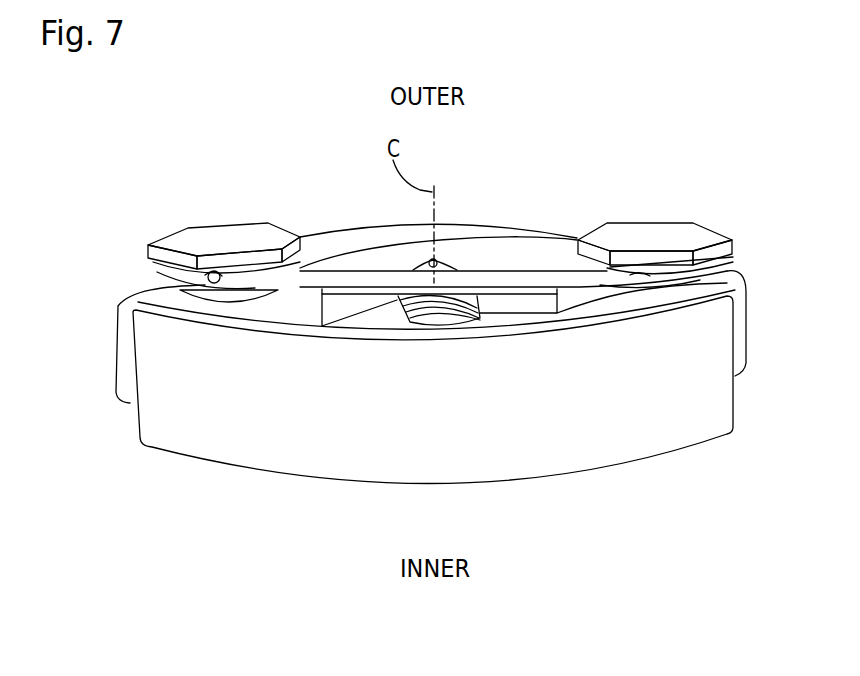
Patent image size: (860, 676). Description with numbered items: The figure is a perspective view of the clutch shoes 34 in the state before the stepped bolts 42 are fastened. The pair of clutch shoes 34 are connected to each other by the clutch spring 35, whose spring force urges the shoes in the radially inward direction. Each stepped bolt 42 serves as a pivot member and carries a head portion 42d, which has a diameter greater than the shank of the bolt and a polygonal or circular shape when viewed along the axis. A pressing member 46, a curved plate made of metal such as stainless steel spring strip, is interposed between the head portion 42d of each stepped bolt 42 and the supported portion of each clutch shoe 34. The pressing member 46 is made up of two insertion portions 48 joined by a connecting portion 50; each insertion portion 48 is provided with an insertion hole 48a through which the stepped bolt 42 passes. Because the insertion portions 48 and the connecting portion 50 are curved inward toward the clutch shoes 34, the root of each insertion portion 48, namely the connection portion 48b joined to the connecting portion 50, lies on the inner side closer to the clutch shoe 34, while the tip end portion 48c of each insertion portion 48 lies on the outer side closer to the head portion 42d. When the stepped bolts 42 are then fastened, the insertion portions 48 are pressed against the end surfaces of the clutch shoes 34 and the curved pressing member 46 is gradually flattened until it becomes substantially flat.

The clutch shoe 34 is at (741, 407).
The clutch spring 35 is at (467, 323).
The stepped bolt 42 is at (197, 228).
The head portion 42d is at (243, 235).
The pressing member 46 is at (322, 263).
The insertion portion 48 is at (223, 287).
The insertion hole 48a is at (210, 278).
The connection portion 48b is at (272, 276).
The tip end portion 48c is at (157, 273).
The connecting portion 50 is at (487, 275).